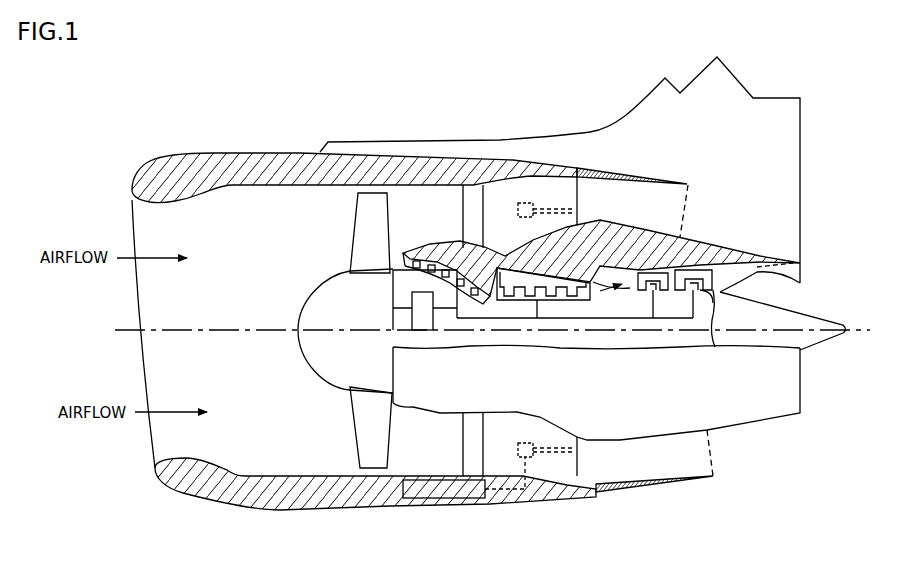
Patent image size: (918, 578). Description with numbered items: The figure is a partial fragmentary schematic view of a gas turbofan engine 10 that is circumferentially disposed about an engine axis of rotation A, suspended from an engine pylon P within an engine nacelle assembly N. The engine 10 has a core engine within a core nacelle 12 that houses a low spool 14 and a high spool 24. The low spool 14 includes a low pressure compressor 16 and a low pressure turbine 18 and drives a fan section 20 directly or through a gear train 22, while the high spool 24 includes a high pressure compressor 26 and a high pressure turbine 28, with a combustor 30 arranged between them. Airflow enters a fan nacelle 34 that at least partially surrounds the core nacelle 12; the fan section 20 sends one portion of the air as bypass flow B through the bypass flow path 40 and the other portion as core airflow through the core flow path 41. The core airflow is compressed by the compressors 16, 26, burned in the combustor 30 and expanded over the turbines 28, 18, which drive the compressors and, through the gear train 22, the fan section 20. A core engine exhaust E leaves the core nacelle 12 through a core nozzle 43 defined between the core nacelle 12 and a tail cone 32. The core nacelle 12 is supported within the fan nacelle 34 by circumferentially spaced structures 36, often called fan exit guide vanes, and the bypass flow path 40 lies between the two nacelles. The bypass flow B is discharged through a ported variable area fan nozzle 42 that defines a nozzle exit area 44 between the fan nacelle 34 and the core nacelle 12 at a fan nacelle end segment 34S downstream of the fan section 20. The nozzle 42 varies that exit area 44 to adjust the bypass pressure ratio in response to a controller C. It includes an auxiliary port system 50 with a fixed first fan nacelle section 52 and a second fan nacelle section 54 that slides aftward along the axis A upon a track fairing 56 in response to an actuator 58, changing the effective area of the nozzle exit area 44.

The gas turbofan engine 10 is at (231, 123).
The core nacelle 12 is at (711, 242).
The low spool 14 is at (634, 334).
The low pressure compressor 16 is at (460, 303).
The low pressure turbine 18 is at (714, 300).
The fan section 20 is at (368, 415).
The gear train 22 is at (417, 333).
The high spool 24 is at (593, 319).
The high pressure compressor 26 is at (540, 302).
The high pressure turbine 28 is at (656, 292).
The combustor 30 is at (607, 293).
The tail cone 32 is at (777, 313).
The fan nacelle 34 is at (380, 170).
The fan nacelle end segment 34S is at (673, 183).
The circumferentially spaced structures (fan exit guide vanes) 36 is at (472, 231).
The bypass flow path 40 is at (501, 212).
The core flow path 41 is at (396, 262).
The ported variable area fan nozzle 42 is at (660, 484).
The core nozzle 43 is at (831, 292).
The nozzle exit area 44 is at (679, 218).
The auxiliary port system 50 is at (615, 162).
The first fan nacelle section 52 is at (503, 157).
The second fan nacelle section 54 is at (627, 168).
The track fairing 56 is at (560, 217).
The actuator 58 is at (530, 202).
The engine nacelle assembly N is at (456, 147).
The engine pylon P is at (788, 157).
The engine axis of rotation A is at (823, 328).
The bypass flow B is at (499, 457).
The controller C is at (450, 499).
The core engine exhaust E is at (757, 387).